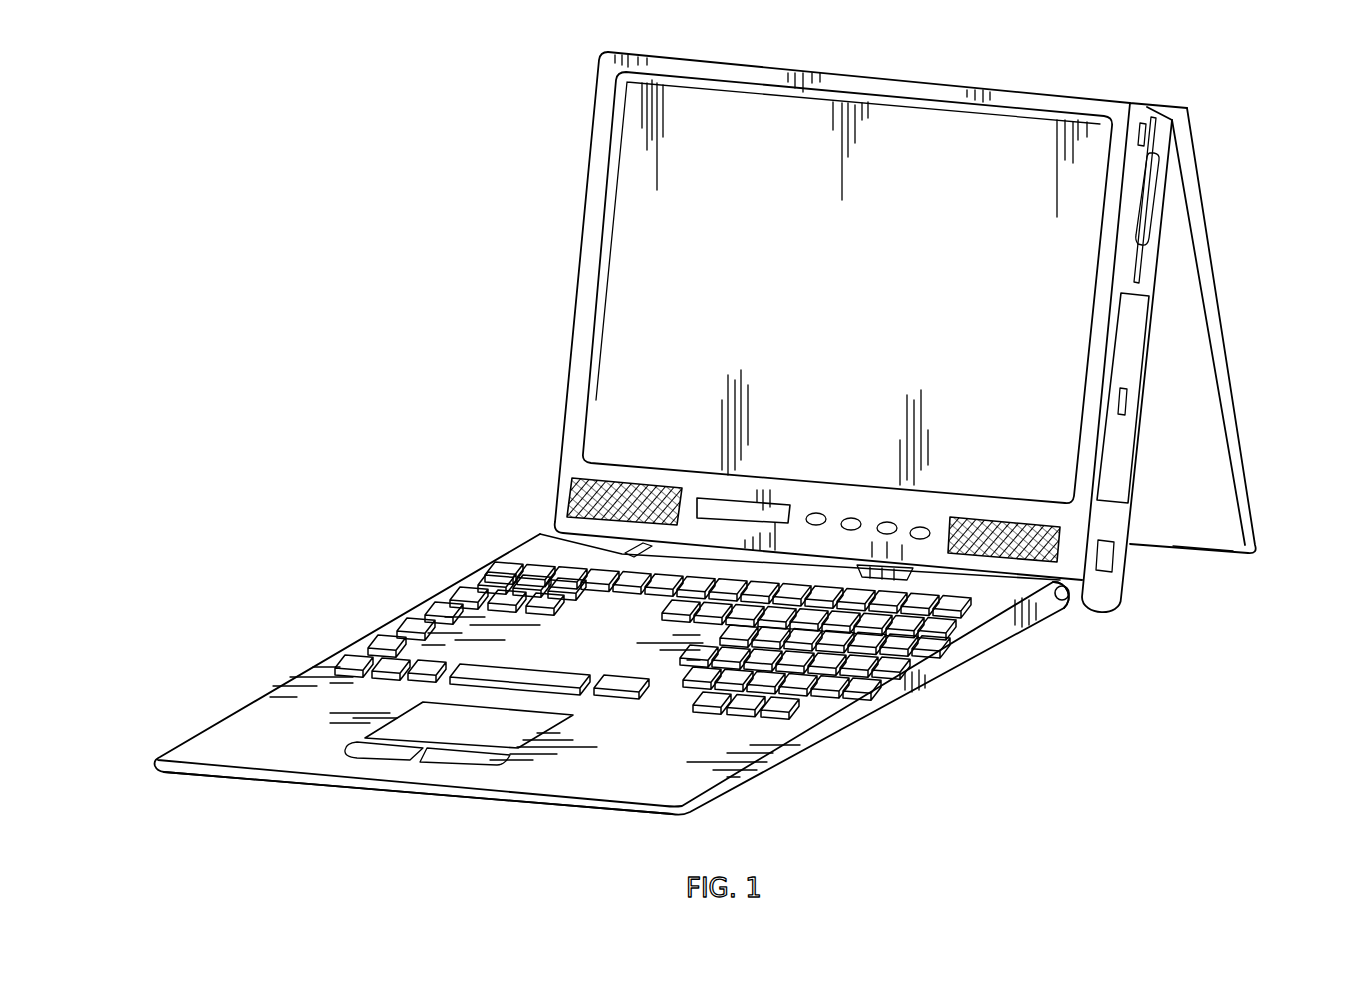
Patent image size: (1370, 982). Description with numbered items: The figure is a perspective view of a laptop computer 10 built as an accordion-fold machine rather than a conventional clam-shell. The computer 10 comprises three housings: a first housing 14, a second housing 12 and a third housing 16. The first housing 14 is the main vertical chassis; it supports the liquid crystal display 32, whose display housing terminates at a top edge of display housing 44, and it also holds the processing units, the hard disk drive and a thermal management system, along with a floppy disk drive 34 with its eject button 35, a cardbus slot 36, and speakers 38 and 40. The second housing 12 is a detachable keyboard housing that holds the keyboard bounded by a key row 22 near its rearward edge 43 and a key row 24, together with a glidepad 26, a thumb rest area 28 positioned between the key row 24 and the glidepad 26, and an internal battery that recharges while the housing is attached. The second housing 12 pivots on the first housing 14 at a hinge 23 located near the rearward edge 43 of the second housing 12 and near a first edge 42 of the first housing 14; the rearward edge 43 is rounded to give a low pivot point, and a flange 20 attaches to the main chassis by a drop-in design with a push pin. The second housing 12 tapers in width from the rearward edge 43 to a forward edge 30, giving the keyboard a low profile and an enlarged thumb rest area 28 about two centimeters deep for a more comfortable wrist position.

The computer 10 is at (1313, 118).
The second housing 12 is at (920, 688).
The first housing 14 is at (575, 310).
The third housing 16 is at (1247, 462).
The flange 20 is at (625, 548).
The key row 22 is at (498, 562).
The hinge 23 is at (1069, 593).
The key row 24 is at (363, 662).
The glidepad 26 is at (400, 725).
The thumb rest area 28 is at (663, 767).
The forward edge 30 is at (638, 812).
The liquid crystal display 32 is at (675, 197).
The floppy disk drive 34 is at (1157, 173).
The eject button 35 is at (1147, 212).
The cardbus slot 36 is at (1133, 347).
The speaker 38 is at (1062, 550).
The speaker 40 is at (575, 505).
The first edge 42 is at (1083, 610).
The rearward edge 43 is at (1067, 608).
The top edge of display housing 44 is at (1018, 88).